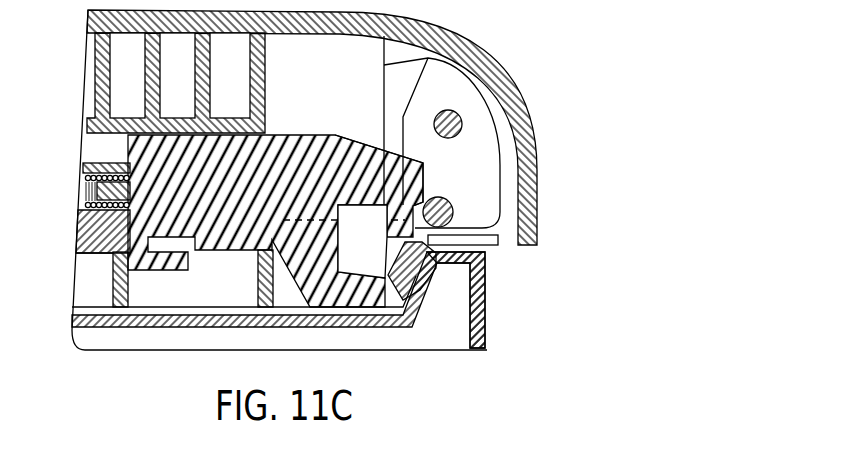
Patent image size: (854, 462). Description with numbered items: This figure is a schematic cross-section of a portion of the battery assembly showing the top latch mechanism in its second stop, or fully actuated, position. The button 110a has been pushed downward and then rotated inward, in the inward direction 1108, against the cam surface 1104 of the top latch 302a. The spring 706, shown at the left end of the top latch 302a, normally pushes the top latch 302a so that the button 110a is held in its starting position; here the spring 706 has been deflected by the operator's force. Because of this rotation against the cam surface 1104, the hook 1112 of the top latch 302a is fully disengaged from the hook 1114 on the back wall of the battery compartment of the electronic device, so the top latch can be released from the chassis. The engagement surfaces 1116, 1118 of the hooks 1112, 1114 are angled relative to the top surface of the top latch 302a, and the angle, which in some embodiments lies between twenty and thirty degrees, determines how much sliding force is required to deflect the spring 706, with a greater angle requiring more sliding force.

The button 110a is at (456, 70).
The top latch 302a is at (275, 181).
The spring 706 is at (76, 161).
The cam surface 1104 is at (410, 172).
The inward direction 1108 is at (289, 214).
The hook 1112 is at (345, 307).
The hook 1114 is at (441, 264).
The engagement surface 1116 is at (356, 260).
The engagement surface 1118 is at (409, 283).